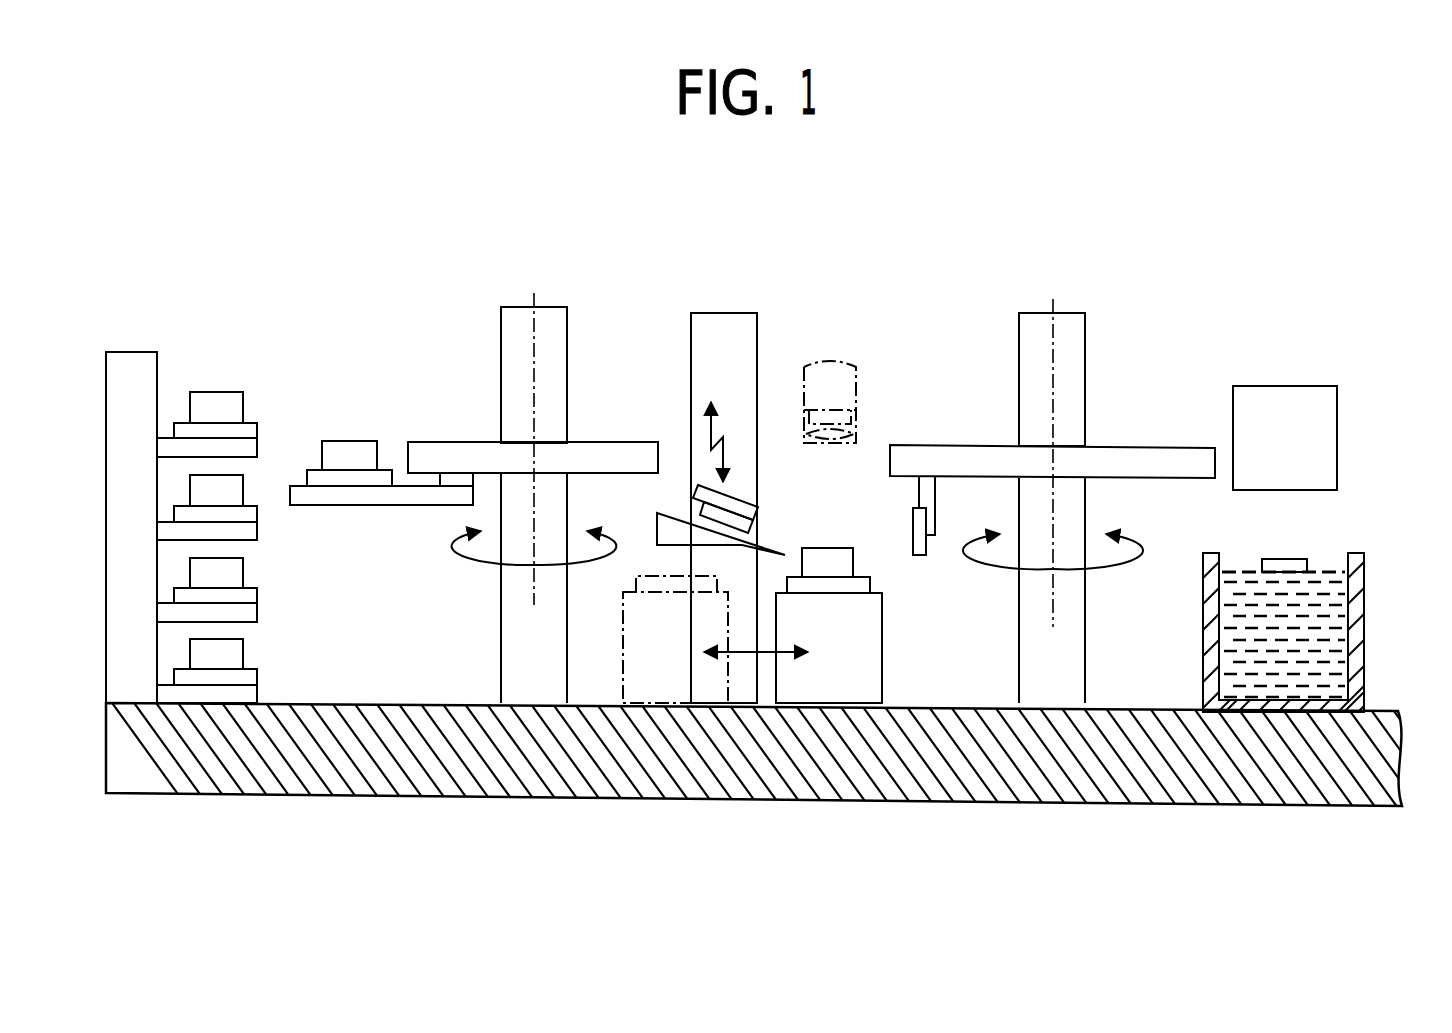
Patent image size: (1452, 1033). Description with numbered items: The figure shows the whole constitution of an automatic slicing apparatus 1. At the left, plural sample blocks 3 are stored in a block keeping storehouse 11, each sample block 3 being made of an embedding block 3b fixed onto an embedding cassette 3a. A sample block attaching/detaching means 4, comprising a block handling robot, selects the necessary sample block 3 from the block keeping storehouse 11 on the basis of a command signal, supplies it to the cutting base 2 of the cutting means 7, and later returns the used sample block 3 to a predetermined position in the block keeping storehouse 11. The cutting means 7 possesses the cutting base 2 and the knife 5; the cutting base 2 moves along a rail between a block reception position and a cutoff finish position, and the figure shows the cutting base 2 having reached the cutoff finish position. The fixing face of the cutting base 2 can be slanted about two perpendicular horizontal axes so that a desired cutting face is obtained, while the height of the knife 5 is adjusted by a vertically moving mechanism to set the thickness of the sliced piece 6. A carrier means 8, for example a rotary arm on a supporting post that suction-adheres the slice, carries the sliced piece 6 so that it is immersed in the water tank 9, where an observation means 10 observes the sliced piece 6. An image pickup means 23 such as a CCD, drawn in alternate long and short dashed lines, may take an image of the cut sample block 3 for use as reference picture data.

The automatic slicing apparatus 1 is at (852, 260).
The cutting base 2 is at (883, 685).
The sample block 3 is at (325, 313).
The embedding cassette 3a is at (247, 432).
The embedding block 3b is at (227, 406).
The sample block attaching/detaching means 4 is at (420, 328).
The knife 5 is at (764, 533).
The sliced piece 6 is at (920, 557).
The cutting means 7 is at (674, 442).
The carrier means 8 is at (1110, 348).
The water tank 9 is at (1365, 622).
The observation means 10 is at (1290, 372).
The block keeping storehouse 11 is at (185, 357).
The image pickup means 23 is at (830, 380).